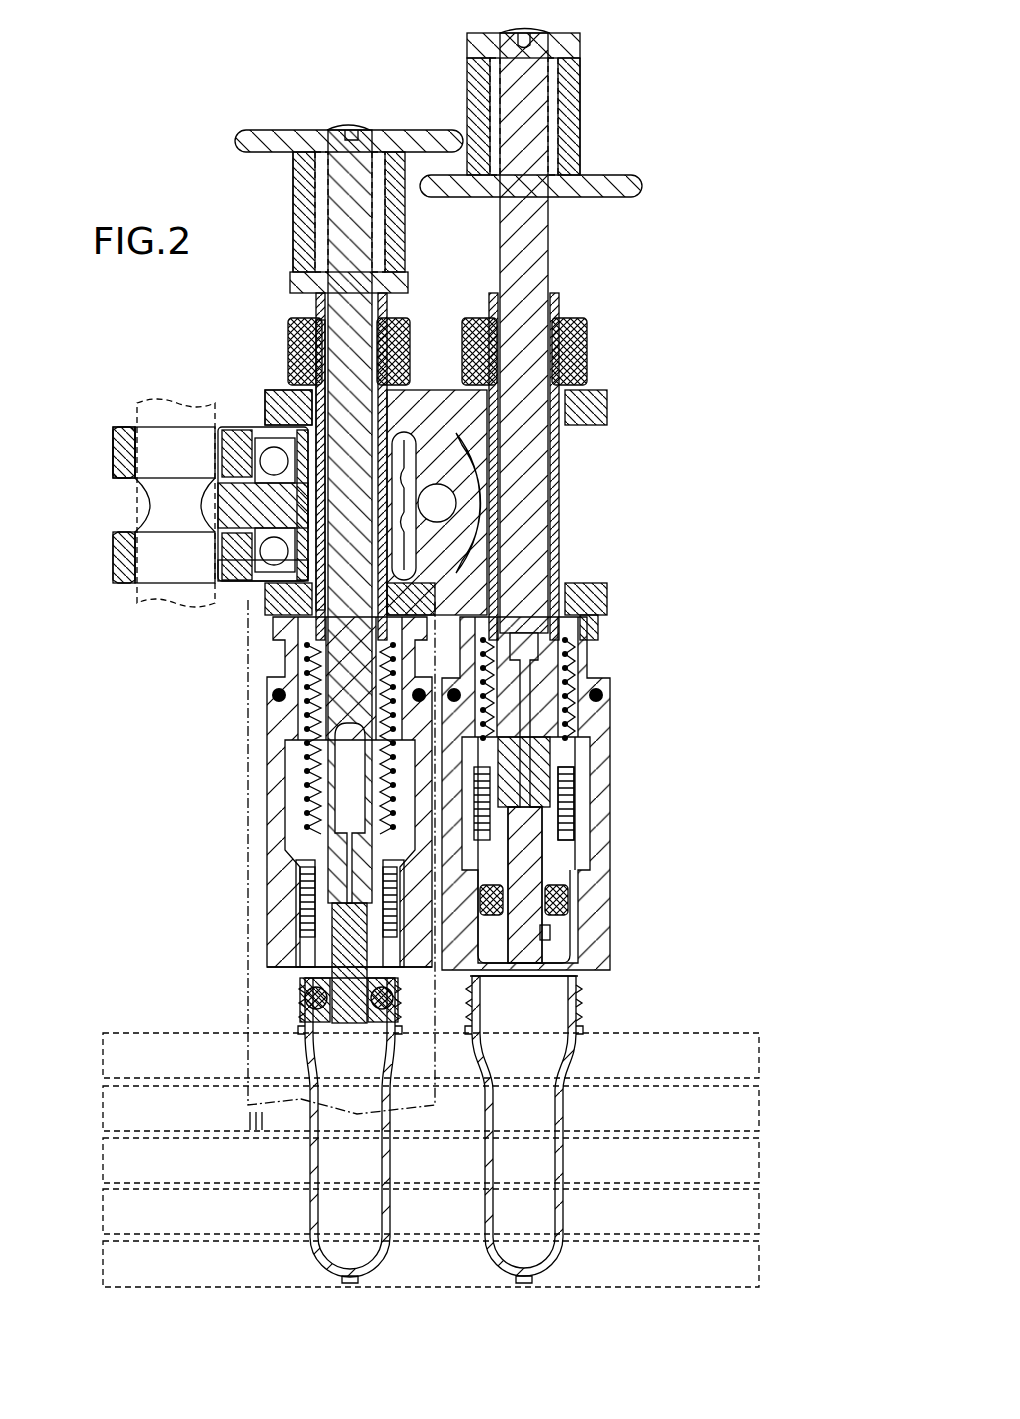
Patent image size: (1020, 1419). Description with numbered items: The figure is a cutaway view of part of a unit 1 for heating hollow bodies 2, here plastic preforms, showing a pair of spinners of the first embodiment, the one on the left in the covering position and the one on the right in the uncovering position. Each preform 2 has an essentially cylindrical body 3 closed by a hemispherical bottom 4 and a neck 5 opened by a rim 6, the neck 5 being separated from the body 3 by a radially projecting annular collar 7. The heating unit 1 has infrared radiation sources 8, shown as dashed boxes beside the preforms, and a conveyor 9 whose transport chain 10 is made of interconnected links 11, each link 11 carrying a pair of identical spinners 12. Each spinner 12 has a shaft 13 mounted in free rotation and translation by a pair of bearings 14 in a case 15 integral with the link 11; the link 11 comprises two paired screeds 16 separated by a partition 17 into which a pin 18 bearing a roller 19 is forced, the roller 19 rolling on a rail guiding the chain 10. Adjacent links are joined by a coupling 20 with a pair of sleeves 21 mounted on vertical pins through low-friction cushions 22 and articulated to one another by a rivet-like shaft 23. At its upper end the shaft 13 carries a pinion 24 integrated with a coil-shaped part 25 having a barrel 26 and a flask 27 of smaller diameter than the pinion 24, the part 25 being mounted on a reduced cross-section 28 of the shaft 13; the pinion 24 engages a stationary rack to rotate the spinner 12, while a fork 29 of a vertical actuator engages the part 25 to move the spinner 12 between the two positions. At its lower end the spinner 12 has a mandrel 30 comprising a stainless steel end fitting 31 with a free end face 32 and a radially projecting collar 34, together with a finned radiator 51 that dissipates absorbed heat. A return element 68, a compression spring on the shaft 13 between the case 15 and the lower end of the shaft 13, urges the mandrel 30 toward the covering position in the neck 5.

The unit for heating hollow bodies 1 is at (397, 565).
The hollow body (preform) 2 is at (436, 1113).
The body 3 is at (312, 1162).
The bottom 4 is at (322, 1262).
The neck 5 is at (298, 1018).
The rim 6 is at (533, 976).
The annular collar 7 is at (297, 1034).
The infrared radiation sources 8 is at (742, 1057).
The conveyor 9 is at (125, 583).
The transport chain 10 is at (125, 583).
The link 11 is at (290, 395).
The device for gripping the preform (spinner) 12 is at (302, 852).
The shaft 13 is at (512, 231).
The bearings 14 is at (492, 300).
The case 15 is at (486, 405).
The screeds 16 is at (590, 425).
The partition 17 is at (424, 460).
The pin 18 is at (425, 515).
The roller 19 is at (478, 482).
The coupling 20 is at (243, 582).
The sleeves 21 is at (258, 440).
The cushions 22 is at (324, 440).
The shaft 23 is at (228, 505).
The pinion 24 is at (290, 140).
The part in the form of a coil 25 is at (322, 130).
The barrel 26 is at (322, 228).
The flask 27 is at (298, 290).
The cross-section of the upper end of the shaft 28 is at (337, 262).
The fork 29 is at (292, 183).
The mandrel 30 is at (298, 931).
The end fitting 31 is at (296, 960).
The face of a free end 32 is at (334, 1030).
The collar 34 is at (568, 925).
The radiator 51 is at (300, 897).
The return element 68 is at (312, 808).